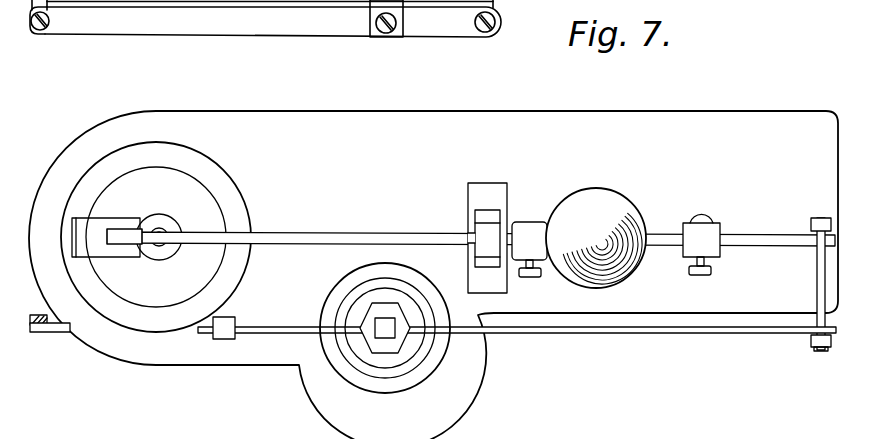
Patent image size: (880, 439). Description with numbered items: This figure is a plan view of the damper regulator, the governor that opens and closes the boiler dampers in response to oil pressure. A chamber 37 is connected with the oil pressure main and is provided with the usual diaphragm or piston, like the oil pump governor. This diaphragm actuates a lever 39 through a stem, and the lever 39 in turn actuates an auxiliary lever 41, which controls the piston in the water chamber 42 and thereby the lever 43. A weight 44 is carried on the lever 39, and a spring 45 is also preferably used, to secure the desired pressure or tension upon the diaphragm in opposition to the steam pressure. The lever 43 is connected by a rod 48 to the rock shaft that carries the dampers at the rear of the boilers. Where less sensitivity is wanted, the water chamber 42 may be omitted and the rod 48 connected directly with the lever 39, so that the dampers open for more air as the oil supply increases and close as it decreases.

The chamber 37 is at (213, 193).
The lever 39 is at (300, 232).
The auxiliary lever 41 is at (605, 334).
The water chamber 42 is at (449, 313).
The lever 43 is at (62, 333).
The weight 44 is at (622, 202).
The spring 45 is at (704, 222).
The rod 48 is at (43, 333).